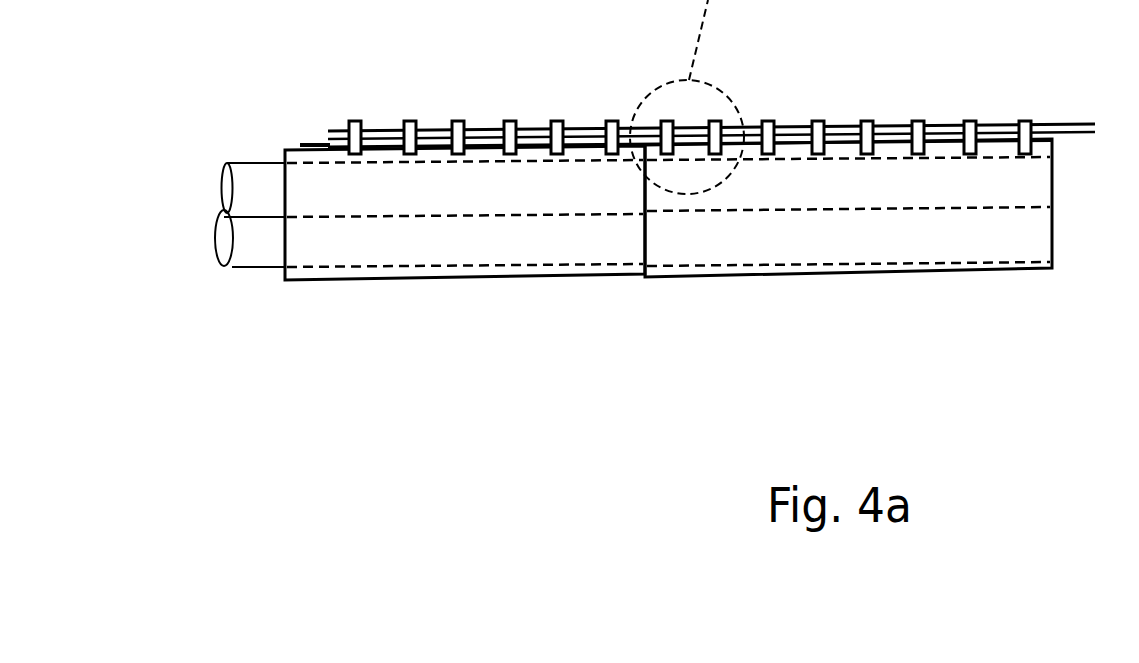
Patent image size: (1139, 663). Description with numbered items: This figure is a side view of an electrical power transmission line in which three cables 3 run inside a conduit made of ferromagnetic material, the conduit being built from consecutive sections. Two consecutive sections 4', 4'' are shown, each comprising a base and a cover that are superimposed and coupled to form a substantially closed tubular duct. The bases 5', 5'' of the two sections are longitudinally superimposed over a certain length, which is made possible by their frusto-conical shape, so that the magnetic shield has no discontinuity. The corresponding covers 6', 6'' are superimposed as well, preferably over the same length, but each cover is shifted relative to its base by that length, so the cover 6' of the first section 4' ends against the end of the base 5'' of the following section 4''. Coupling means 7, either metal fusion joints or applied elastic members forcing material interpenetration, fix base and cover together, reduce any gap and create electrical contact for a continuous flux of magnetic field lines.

The cables 3 is at (247, 253).
The section 4' is at (503, 285).
The following section 4'' is at (870, 282).
The base 5' is at (465, 251).
The base 5'' is at (848, 240).
The cover 6' is at (509, 87).
The cover 6'' is at (892, 85).
The coupling means 7 is at (818, 122).